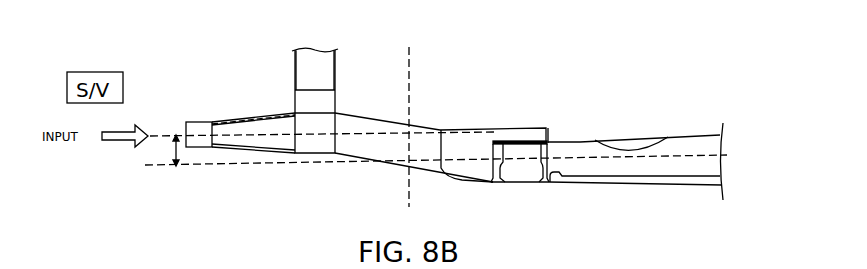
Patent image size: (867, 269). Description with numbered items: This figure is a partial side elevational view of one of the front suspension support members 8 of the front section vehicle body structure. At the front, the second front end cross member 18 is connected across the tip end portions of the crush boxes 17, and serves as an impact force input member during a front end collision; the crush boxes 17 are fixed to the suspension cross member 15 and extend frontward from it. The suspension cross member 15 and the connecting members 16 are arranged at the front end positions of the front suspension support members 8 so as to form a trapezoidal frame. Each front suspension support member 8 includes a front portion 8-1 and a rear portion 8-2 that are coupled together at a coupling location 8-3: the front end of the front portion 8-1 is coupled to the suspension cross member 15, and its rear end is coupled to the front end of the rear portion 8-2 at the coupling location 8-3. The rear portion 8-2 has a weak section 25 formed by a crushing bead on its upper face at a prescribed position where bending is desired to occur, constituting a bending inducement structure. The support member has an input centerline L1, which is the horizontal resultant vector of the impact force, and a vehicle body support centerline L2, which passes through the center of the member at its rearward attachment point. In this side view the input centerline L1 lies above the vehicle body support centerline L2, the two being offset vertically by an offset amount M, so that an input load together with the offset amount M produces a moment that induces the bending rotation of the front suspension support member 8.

The second front end cross member 18 is at (198, 122).
The crush box 17 is at (257, 153).
The input centerline L1 is at (260, 132).
The suspension cross member 15 is at (310, 163).
The connecting member 16 is at (337, 68).
The front portion 8-1 is at (378, 122).
The front suspension support member 8 is at (521, 122).
The coupling location 8-3 is at (522, 190).
The rear portion 8-2 is at (578, 140).
The weak section 25 is at (630, 140).
The vehicle body support centerline L2 is at (363, 167).
The offset amount M is at (176, 152).